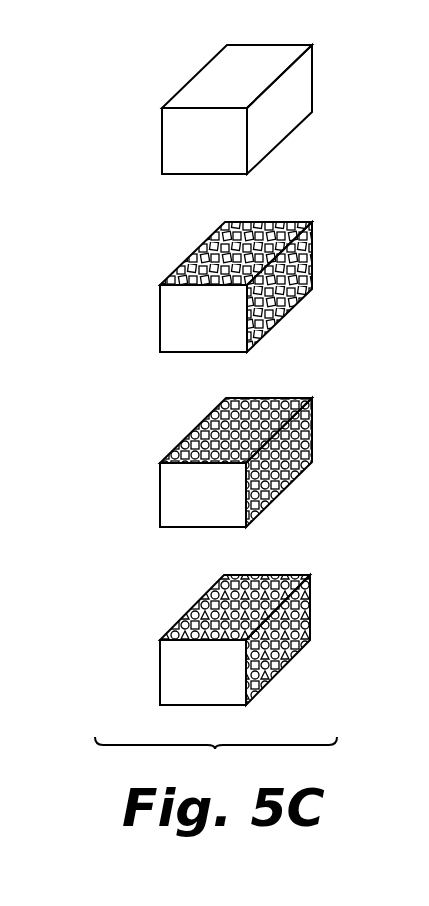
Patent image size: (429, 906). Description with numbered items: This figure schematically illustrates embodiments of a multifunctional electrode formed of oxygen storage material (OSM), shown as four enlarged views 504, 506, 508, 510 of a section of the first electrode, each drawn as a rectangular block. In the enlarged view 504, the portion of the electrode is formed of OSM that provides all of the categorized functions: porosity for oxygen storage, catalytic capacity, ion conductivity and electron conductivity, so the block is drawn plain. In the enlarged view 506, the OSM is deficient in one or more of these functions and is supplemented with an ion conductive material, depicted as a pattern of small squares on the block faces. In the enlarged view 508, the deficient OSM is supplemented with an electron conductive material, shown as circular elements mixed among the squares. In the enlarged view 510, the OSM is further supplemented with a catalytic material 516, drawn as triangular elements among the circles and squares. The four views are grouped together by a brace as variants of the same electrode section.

The enlarged view 504 is at (162, 140).
The enlarged view 506 is at (160, 318).
The enlarged view 508 is at (160, 495).
The enlarged view 510 is at (160, 673).
The catalytic material 516 is at (310, 642).